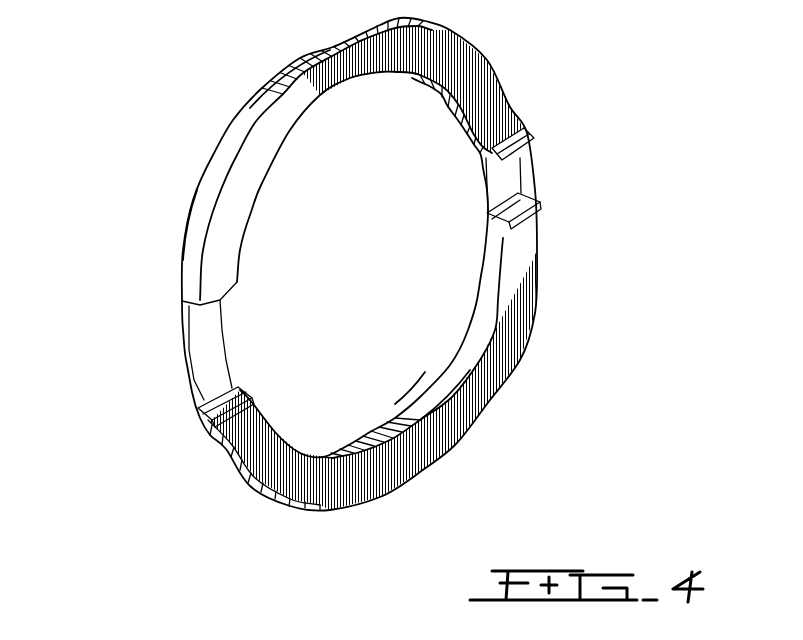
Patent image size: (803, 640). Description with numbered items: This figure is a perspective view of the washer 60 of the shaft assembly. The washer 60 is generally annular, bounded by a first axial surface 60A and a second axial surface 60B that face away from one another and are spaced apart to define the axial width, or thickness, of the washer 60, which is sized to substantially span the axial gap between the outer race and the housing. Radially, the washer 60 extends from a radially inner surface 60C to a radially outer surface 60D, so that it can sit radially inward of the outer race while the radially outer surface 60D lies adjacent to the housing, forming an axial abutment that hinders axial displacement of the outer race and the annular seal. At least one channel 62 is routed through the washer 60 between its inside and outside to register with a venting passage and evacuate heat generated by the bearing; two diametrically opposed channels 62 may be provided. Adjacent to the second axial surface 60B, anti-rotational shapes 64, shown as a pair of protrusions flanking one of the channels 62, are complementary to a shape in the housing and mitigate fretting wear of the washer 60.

The washer 60 is at (128, 114).
The first axial surface 60A is at (195, 198).
The second axial surface 60B is at (430, 441).
The radially inner surface 60C is at (415, 414).
The radially outer surface 60D is at (262, 100).
The channel 62 is at (204, 350).
The anti-rotational shape 64 is at (534, 141).